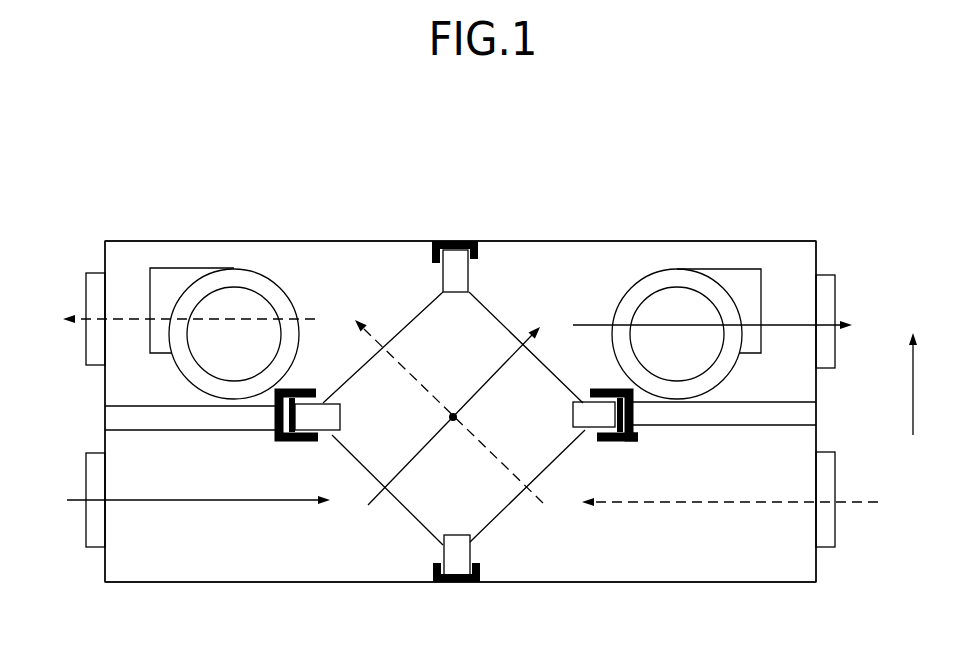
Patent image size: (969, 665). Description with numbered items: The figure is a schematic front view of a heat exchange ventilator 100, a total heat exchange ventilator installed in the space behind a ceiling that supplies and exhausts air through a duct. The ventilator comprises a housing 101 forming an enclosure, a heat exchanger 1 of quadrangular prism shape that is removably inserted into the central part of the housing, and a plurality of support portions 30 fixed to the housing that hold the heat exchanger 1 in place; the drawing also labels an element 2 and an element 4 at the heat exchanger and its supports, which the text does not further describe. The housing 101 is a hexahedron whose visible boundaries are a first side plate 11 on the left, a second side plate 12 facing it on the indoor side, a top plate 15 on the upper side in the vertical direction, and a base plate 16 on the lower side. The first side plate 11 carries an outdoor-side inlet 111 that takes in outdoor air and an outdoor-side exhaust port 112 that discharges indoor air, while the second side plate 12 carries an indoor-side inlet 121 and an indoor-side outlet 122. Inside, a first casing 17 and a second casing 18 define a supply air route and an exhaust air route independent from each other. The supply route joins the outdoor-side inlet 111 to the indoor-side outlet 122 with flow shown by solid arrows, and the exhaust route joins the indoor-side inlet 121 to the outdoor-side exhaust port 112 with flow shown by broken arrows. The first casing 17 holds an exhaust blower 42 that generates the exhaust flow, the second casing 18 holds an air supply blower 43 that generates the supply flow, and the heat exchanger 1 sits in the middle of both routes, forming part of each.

The heat exchange ventilator 100 is at (768, 176).
The housing 101 is at (797, 241).
The heat exchanger 1 is at (454, 403).
The side face of heat exchange element 2 is at (412, 520).
The sealing member 4 is at (470, 271).
The support portion 30 is at (303, 388).
The first side plate 11 is at (105, 385).
The second side plate 12 is at (820, 385).
The top plate 15 is at (667, 241).
The base plate 16 is at (780, 582).
The first casing 17 is at (177, 430).
The second casing 18 is at (748, 412).
The exhaust blower 42 is at (178, 268).
The air supply blower 43 is at (722, 268).
The outdoor-side inlet 111 is at (86, 475).
The outdoor-side exhaust port 112 is at (86, 291).
The indoor-side inlet 121 is at (835, 478).
The indoor-side outlet 122 is at (835, 292).